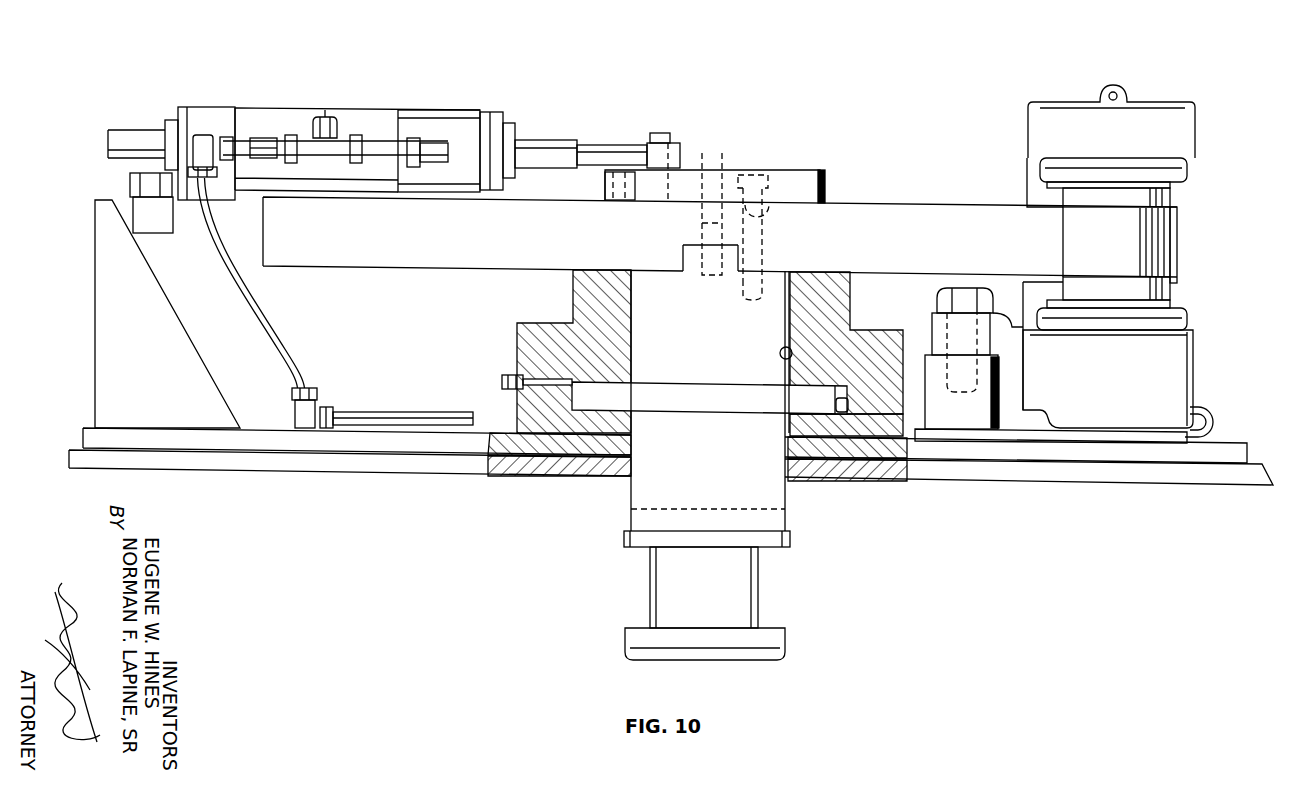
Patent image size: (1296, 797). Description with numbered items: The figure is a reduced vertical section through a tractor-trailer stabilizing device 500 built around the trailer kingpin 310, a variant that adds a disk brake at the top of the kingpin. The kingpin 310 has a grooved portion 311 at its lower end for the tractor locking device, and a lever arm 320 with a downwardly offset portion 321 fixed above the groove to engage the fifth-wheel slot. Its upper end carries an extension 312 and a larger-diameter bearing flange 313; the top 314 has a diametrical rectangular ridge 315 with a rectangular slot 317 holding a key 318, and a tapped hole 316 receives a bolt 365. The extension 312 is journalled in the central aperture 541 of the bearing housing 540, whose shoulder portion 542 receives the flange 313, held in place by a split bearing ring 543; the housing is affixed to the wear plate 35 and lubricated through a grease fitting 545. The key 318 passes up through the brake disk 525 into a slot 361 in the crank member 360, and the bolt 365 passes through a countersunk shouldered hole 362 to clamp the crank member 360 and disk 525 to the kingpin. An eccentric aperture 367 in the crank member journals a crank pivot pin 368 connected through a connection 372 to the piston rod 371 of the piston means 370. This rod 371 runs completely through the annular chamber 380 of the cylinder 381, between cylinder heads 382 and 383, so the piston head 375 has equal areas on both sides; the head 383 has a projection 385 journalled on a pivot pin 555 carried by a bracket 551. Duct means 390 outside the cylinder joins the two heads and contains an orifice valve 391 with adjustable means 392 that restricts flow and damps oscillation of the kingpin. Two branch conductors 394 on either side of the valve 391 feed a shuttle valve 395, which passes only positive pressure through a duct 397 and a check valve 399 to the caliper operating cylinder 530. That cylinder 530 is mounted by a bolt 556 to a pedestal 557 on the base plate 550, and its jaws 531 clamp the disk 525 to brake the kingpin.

The wear plate 35 is at (1022, 473).
The kingpin 310 is at (697, 569).
The grooved portion 311 is at (718, 606).
The extension 312 is at (735, 367).
The bearing flange 313 is at (732, 409).
The top 314 is at (773, 273).
The rectangular ridge 315 is at (697, 264).
The tapped hole 316 is at (745, 290).
The rectangular slot 317 is at (702, 283).
The key 318 is at (712, 223).
The lever arm 320 is at (790, 494).
The offset portion 321 is at (786, 526).
The crank member 360 is at (827, 178).
The slot 361 is at (698, 180).
The countersunk shouldered hole 362 is at (768, 222).
The bolt 365 is at (757, 176).
The aperture 367 is at (605, 185).
The crank pivot pin 368 is at (666, 133).
The piston means 370 is at (620, 136).
The piston rod 371 is at (138, 130).
The connection 372 is at (680, 154).
The piston head 375 is at (300, 124).
The annular chamber 380 is at (355, 116).
The cylinder 381 is at (264, 113).
The cylinder head 382 is at (477, 115).
The cylinder head 383 is at (188, 108).
The projection 385 is at (128, 190).
The duct means 390 is at (392, 137).
The valve 391 is at (328, 160).
The adjustable means 392 is at (330, 110).
The branch conductor 394 is at (264, 158).
The shuttle valve 395 is at (200, 138).
The duct 397 is at (248, 290).
The check valve 399 is at (320, 400).
The stabilizing device 500 is at (548, 120).
The disk 525 is at (1080, 255).
The caliper operating cylinder 530 is at (1202, 362).
The jaw 531 is at (1162, 197).
The bearing housing 540 is at (872, 324).
The central aperture 541 is at (793, 353).
The shoulder portion 542 is at (851, 407).
The bearing ring 543 is at (802, 430).
The grease fitting 545 is at (505, 373).
The base plate 550 is at (1222, 448).
The bracket 551 is at (160, 377).
The pivot pin 555 is at (142, 175).
The bolt 556 is at (962, 298).
The pedestal 557 is at (970, 423).